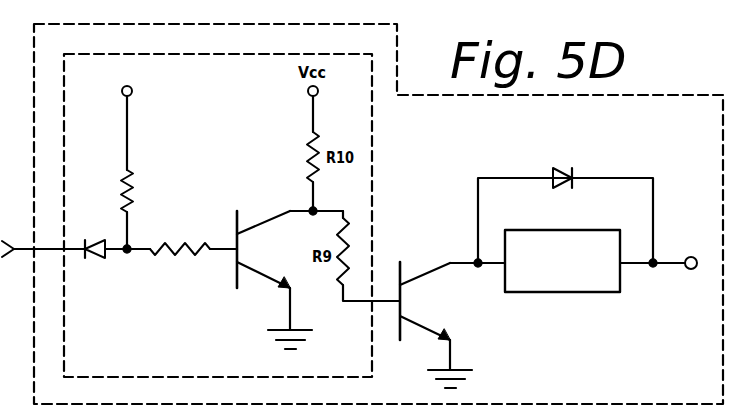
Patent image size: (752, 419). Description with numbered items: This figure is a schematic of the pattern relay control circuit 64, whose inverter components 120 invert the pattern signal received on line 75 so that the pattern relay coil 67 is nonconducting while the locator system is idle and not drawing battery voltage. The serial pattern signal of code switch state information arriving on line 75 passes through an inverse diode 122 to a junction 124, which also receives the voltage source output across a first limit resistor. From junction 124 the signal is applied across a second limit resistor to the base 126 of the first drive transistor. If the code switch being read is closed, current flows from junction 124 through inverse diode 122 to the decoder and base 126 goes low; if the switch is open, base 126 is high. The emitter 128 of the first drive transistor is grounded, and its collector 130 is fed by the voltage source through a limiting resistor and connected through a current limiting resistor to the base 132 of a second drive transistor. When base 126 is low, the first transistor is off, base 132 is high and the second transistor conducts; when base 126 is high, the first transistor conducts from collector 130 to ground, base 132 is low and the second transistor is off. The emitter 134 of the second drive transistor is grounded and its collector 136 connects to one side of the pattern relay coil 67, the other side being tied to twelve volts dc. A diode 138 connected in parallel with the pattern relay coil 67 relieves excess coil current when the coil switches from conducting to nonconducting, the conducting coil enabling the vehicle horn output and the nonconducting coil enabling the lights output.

The pattern relay control circuit 64 is at (398, 78).
The pattern relay control circuit components 120 is at (372, 138).
The line 75 is at (19, 262).
The inverse diode 122 is at (96, 262).
The junction 124 is at (128, 262).
The base of drive transistor Q1 126 is at (228, 262).
The collector of transistor Q1 130 is at (268, 213).
The emitter of transistor Q1 128 is at (295, 299).
The base of second drive transistor Q2 132 is at (382, 305).
The collector of transistor Q2 136 is at (441, 259).
The emitter of transistor Q2 134 is at (455, 348).
The pattern relay coil 67 is at (612, 296).
The diode 138 is at (556, 166).